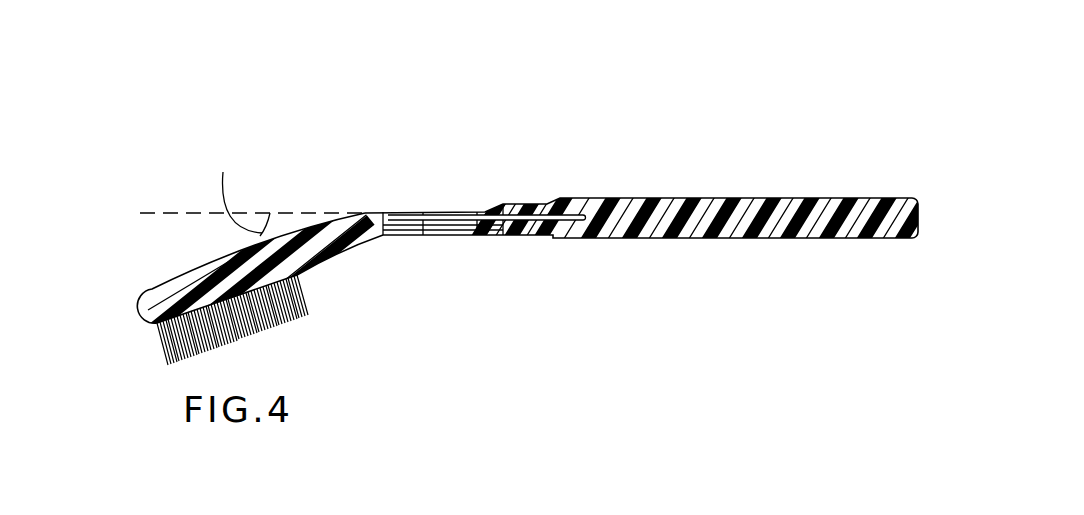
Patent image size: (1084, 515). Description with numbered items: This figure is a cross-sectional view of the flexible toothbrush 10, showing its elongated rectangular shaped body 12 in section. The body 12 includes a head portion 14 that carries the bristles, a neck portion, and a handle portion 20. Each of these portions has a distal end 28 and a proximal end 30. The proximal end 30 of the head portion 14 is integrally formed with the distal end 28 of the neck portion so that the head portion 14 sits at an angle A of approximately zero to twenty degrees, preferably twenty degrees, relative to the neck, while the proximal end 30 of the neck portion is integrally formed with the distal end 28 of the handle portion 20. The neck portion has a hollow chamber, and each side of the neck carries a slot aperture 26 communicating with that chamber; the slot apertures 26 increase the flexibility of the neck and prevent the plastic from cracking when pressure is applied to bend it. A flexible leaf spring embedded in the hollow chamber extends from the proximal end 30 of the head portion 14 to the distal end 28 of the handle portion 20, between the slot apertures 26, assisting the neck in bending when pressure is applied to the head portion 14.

The flexible toothbrush 10 is at (503, 232).
The elongated rectangular shaped body 12 is at (563, 197).
The head portion 14 is at (217, 265).
The handle portion 20 is at (755, 228).
The slot aperture 26 is at (463, 212).
The distal end 28 is at (150, 303).
The proximal end 30 is at (320, 255).